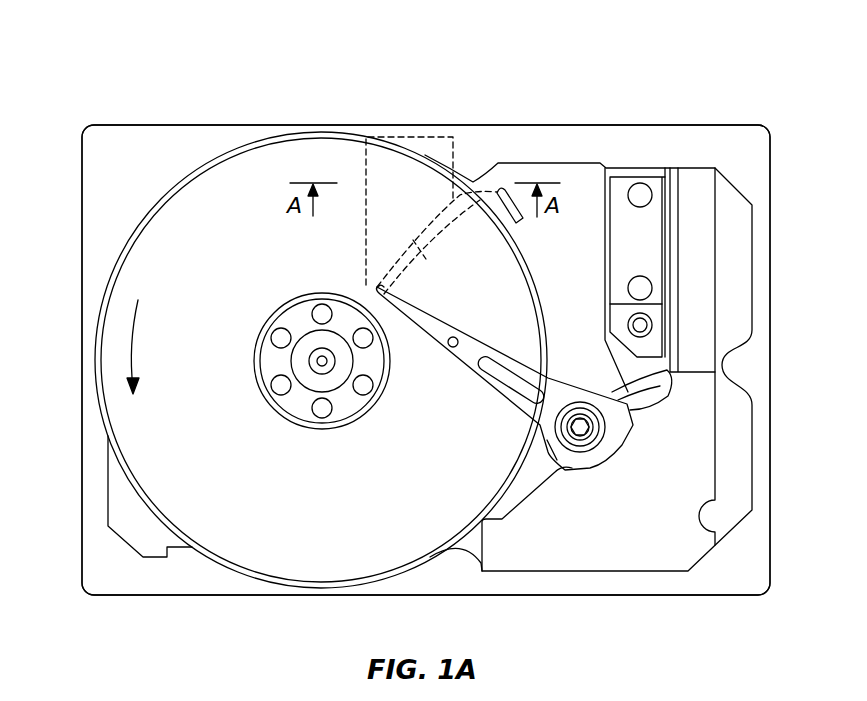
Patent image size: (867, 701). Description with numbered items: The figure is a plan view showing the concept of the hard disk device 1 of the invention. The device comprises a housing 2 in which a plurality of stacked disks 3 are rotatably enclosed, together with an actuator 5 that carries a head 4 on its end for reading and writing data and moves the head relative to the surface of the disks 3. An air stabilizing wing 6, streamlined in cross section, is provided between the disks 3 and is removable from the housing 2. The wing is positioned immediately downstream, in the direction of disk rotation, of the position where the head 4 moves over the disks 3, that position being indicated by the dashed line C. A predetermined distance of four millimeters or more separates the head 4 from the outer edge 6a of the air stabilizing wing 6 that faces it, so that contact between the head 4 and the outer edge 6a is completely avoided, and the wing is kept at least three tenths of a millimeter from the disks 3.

The hard disk device 1 is at (613, 87).
The housing 2 is at (727, 132).
The disks 3 is at (92, 174).
The head 4 is at (366, 285).
The actuator 5 is at (500, 393).
The air stabilizing wing 6 is at (400, 173).
The outer edge of the air stabilizing wing 6a is at (383, 263).
The dashed line indicating head movement position C is at (435, 260).